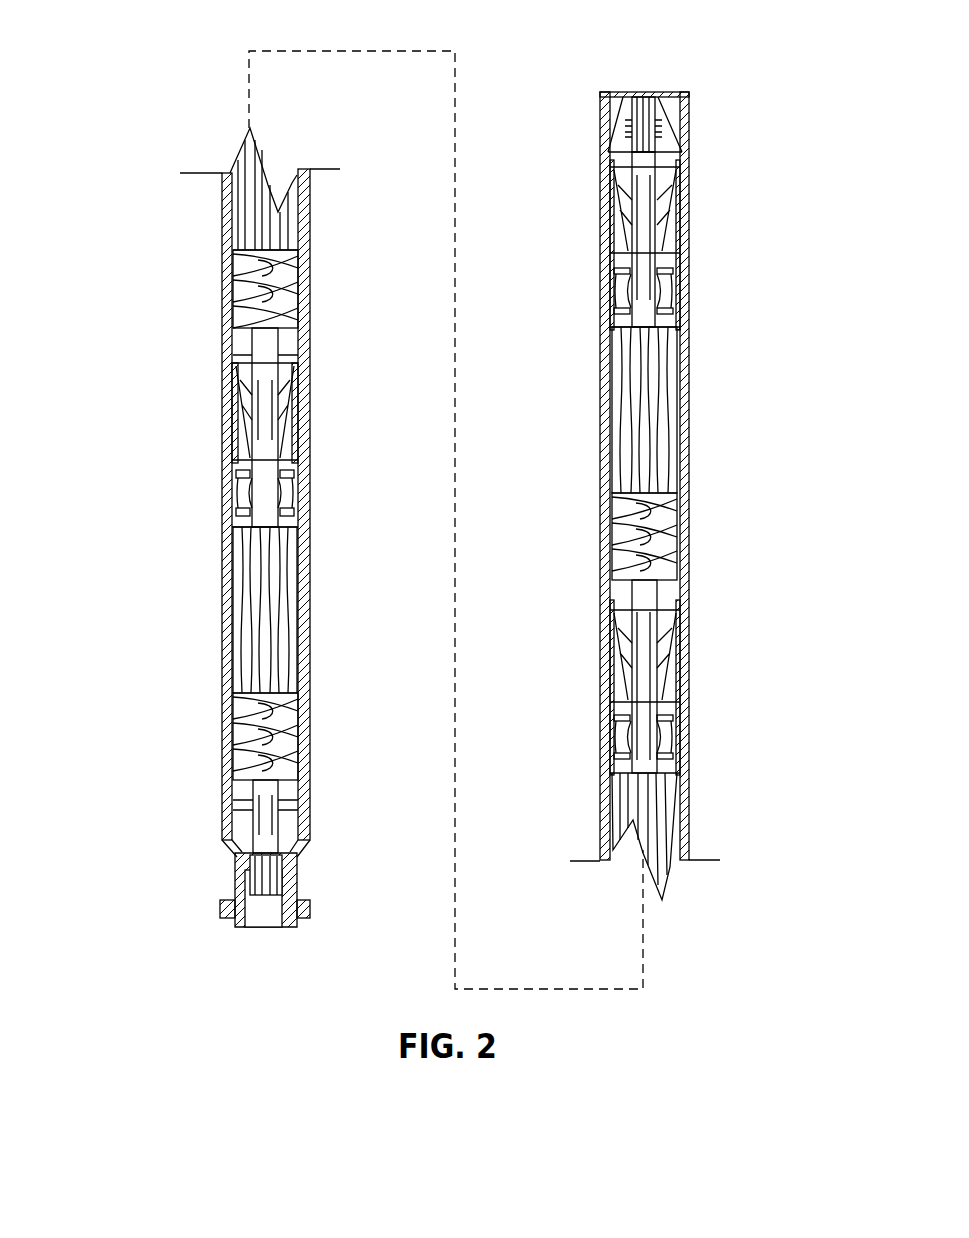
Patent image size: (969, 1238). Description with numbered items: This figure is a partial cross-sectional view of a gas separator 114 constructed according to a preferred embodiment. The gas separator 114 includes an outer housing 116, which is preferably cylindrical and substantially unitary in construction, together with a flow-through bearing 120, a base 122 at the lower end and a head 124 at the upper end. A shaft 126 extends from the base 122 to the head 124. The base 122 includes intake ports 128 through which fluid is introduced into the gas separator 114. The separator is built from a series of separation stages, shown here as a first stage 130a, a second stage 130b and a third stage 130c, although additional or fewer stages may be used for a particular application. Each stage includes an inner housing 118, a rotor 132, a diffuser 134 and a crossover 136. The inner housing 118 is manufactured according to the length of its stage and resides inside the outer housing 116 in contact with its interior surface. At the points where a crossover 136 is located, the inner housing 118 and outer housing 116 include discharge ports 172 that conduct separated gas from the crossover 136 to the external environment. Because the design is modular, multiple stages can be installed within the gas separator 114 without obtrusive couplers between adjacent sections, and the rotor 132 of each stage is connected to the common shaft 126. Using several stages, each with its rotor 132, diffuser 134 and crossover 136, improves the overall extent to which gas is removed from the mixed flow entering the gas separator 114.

The gas separator 114 is at (221, 72).
The outer housing 116 is at (225, 352).
The inner housing 118 is at (228, 290).
The flow-through bearing 120 is at (240, 800).
The base 122 is at (237, 885).
The head 124 is at (688, 127).
The shaft 126 is at (270, 498).
The intake ports 128 is at (228, 845).
The first stage 130a is at (123, 648).
The second stage 130b is at (123, 238).
The third stage 130c is at (576, 372).
The rotor 132 is at (255, 240).
The diffuser 134 is at (245, 495).
The crossover 136 is at (238, 378).
The discharge ports 172 is at (226, 413).